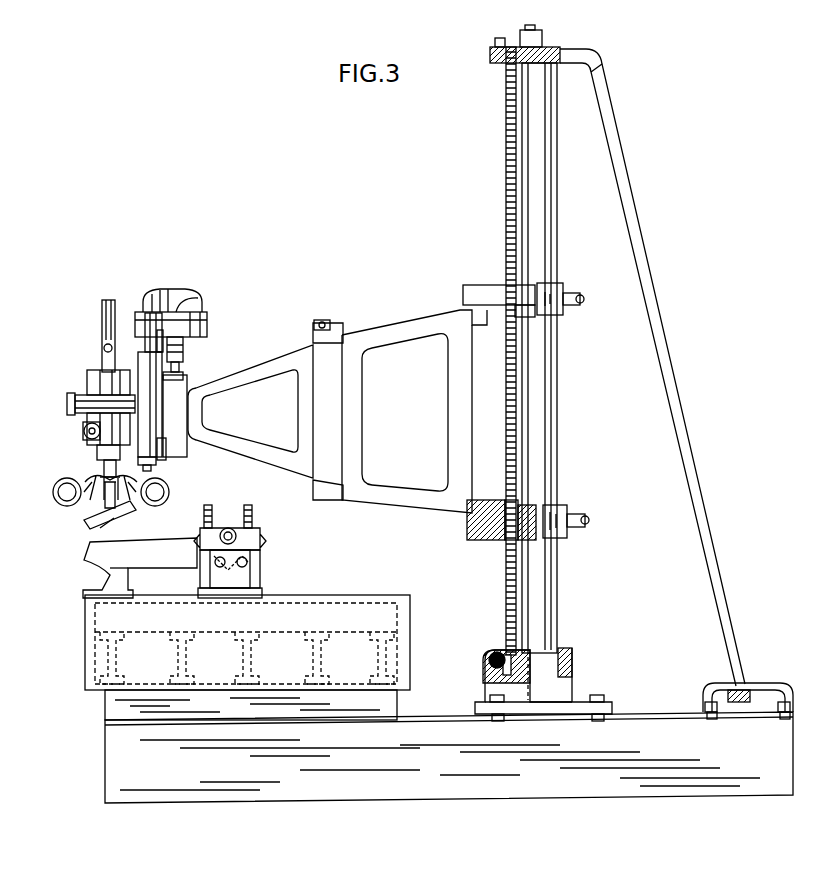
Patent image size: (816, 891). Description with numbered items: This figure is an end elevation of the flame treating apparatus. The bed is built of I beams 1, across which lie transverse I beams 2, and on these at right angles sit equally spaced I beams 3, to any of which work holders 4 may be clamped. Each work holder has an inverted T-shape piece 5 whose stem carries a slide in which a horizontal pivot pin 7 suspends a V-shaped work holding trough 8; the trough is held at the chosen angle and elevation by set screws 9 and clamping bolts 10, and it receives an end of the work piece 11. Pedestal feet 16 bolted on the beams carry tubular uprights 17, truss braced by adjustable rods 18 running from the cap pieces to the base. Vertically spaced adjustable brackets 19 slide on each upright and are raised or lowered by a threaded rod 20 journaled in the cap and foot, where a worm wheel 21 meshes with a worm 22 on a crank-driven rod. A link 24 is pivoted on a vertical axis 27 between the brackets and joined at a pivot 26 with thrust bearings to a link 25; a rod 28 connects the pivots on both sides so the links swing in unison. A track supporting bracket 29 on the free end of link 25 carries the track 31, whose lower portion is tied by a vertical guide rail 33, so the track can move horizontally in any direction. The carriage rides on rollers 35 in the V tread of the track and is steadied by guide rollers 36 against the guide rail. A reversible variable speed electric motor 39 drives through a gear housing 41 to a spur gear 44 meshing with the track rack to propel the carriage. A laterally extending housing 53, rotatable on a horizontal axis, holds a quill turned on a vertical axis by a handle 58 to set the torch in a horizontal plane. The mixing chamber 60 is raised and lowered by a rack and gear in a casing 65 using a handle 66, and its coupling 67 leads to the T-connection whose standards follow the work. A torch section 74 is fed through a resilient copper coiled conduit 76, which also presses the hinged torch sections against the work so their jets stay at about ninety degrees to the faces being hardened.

The I beams 1 is at (595, 778).
The transverse I beams 2 is at (85, 677).
The equally spaced I beams 3 is at (375, 605).
The work holders 4 is at (254, 535).
The inverted T-shape piece 5 is at (262, 592).
The horizontal pivot pin 7 is at (230, 528).
The V-shaped work holding trough 8 is at (262, 541).
The set screws 9 is at (252, 516).
The clamping bolts 10 is at (260, 562).
The work piece 11 is at (155, 555).
The pedestal feet 16 is at (572, 684).
The tubular pedestals or uprights 17 is at (557, 604).
The adjustable rods 18 is at (720, 560).
The adjustable brackets 19 is at (562, 285).
The threaded rod 20 is at (514, 443).
The worm wheel 21 is at (503, 652).
The worm 22 is at (492, 655).
The link 24 is at (397, 403).
The link 25 is at (252, 366).
The pivot joint with thrust bearings 26 is at (325, 492).
The vertical axis 27 is at (470, 528).
The rod 28 is at (322, 318).
The track supporting bracket or link 29 is at (163, 413).
The track 31 is at (172, 378).
The guide rail 33 is at (166, 458).
The rollers 35 is at (160, 330).
The guide rollers 36 is at (152, 463).
The reversible variable speed electric motor 39 is at (196, 295).
The gear housing 41 is at (207, 325).
The spur gear 44 is at (183, 362).
The laterally extending housing 53 is at (88, 382).
The handle 58 is at (67, 403).
The mixing chamber 60 is at (100, 357).
The casing 65 is at (97, 441).
The handle 66 is at (84, 433).
The coupling 67 is at (104, 462).
The torch section 74 is at (85, 521).
The resilient copper coiled conduit 76 is at (53, 495).